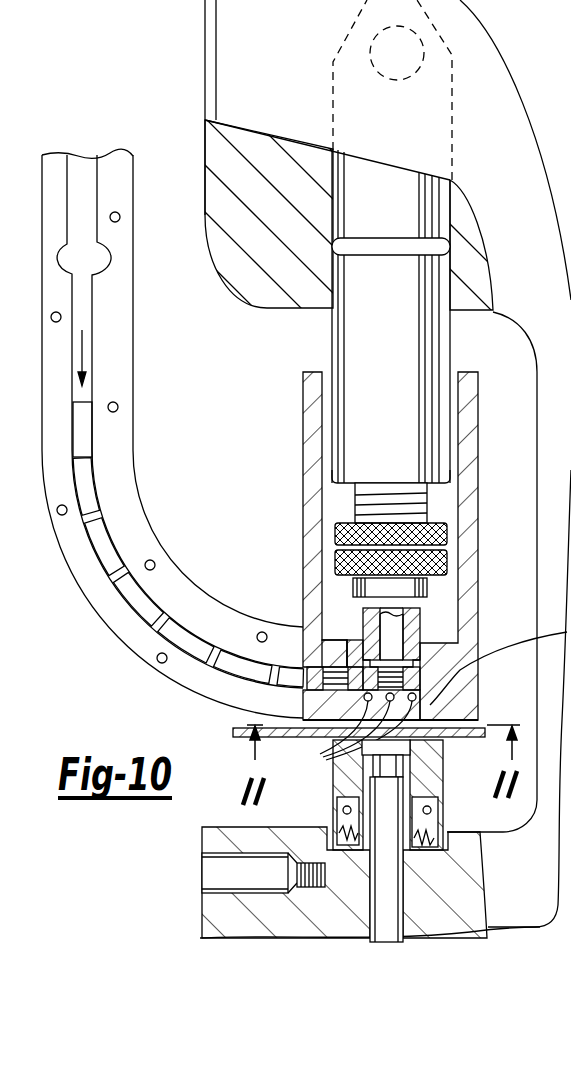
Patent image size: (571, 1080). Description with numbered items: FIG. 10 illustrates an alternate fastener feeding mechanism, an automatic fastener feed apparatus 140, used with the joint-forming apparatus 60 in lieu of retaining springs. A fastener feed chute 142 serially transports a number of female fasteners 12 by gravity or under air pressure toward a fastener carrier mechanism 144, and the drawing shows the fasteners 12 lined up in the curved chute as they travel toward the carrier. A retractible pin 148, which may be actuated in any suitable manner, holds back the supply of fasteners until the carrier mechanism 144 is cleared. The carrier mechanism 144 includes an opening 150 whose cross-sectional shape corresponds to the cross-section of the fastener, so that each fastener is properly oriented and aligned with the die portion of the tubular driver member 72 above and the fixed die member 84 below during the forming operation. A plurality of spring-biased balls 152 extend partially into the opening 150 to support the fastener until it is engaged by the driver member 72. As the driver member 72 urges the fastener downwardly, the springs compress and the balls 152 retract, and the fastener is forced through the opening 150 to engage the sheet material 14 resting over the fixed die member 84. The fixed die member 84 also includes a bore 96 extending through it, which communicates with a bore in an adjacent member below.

The female fasteners 12 is at (90, 487).
The sheet material 14 is at (478, 728).
The joint-forming apparatus 60 is at (305, 333).
The tubular driver member 72 is at (420, 632).
The fixed die member 84 is at (337, 920).
The bore 96 is at (390, 940).
The automatic fastener feed apparatus 140 is at (124, 683).
The fastener feed chute 142 is at (135, 521).
The fastener carrier mechanism 144 is at (306, 513).
The retractible pin 148 is at (314, 668).
The opening 150 is at (420, 707).
The balls 152 is at (346, 735).